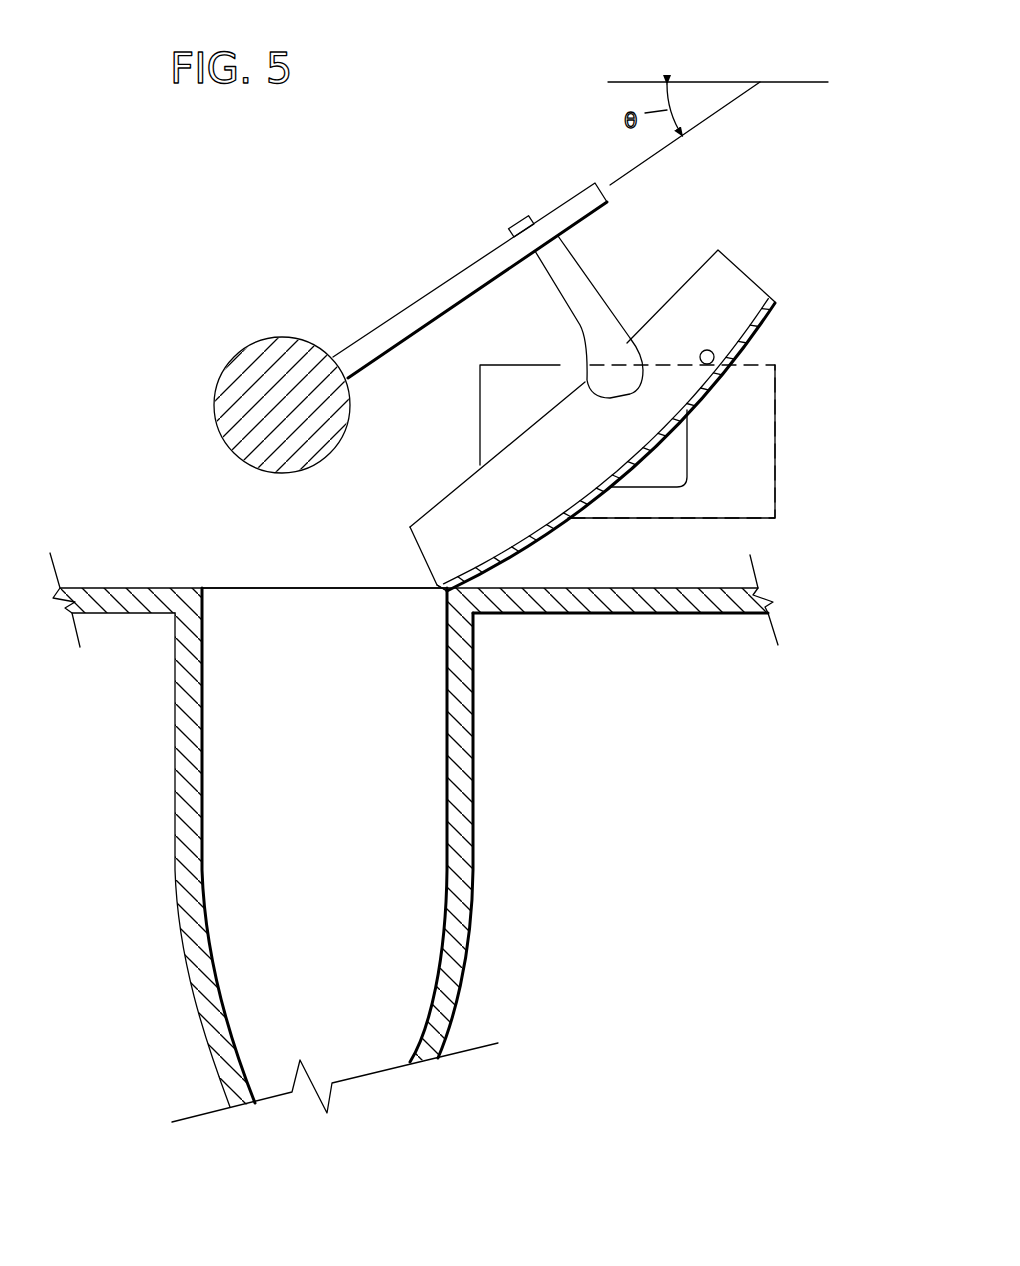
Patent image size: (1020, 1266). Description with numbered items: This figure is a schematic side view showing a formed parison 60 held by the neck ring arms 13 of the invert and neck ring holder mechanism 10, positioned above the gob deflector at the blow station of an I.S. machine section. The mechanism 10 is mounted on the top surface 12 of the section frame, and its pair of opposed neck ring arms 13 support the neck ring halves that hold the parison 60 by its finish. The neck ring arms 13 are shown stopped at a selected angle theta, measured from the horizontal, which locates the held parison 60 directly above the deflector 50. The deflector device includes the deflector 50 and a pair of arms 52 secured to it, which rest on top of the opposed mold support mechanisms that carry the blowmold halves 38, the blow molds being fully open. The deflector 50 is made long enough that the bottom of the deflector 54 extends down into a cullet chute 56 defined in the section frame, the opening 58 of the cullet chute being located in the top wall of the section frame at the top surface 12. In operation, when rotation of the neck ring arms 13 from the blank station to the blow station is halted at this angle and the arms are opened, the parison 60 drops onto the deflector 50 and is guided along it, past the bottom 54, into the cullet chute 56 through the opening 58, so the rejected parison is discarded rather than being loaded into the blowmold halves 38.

The invert and neck ring holder mechanism 10 is at (232, 352).
The top surface 12 is at (630, 583).
The neck ring arms 13 is at (427, 303).
The blowmold halves 38 is at (740, 423).
The deflector 50 is at (534, 492).
The arms 52 is at (700, 350).
The bottom of the deflector 54 is at (440, 592).
The cullet chute 56 is at (455, 742).
The opening 58 is at (210, 587).
The parisons 60 is at (573, 288).